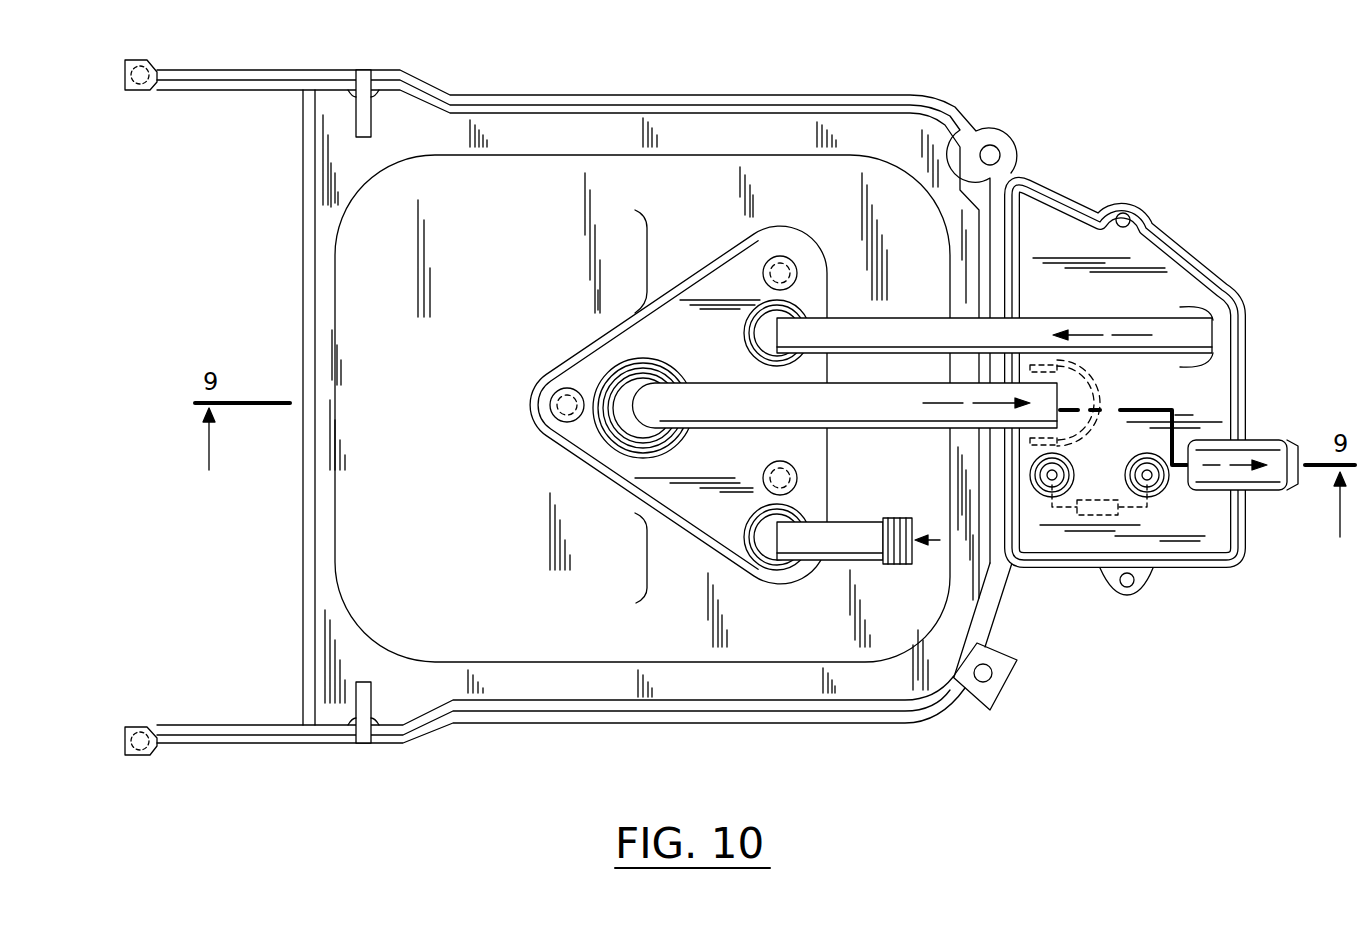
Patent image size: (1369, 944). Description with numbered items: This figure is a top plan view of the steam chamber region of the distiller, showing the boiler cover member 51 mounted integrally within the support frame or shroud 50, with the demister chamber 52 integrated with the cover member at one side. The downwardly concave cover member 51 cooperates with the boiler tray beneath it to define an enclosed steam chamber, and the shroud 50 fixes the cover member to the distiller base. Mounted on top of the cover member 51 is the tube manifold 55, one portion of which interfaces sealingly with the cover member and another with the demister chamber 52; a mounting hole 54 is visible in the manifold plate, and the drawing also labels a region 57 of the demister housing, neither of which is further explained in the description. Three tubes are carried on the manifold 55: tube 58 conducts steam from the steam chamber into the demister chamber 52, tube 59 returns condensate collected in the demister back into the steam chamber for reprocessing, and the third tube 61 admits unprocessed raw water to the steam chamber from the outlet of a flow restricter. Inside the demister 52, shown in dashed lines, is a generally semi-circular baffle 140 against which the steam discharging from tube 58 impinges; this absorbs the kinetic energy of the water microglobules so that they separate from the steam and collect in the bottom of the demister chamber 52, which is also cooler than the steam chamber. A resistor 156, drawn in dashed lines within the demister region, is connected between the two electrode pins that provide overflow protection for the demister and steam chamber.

The support frame or shroud 50 is at (531, 95).
The boiler tray cover member 51 is at (627, 180).
The demister chamber 52 is at (1243, 320).
The mounting hole 54 is at (783, 257).
The tube manifold 55 is at (698, 252).
The chamber 57 is at (1053, 222).
The steam tube 58 is at (900, 405).
The condensate return tube 59 is at (898, 318).
The raw water infeed tube 61 is at (850, 542).
The semi-circular baffle 140 is at (1100, 375).
The resistor 156 is at (1097, 515).